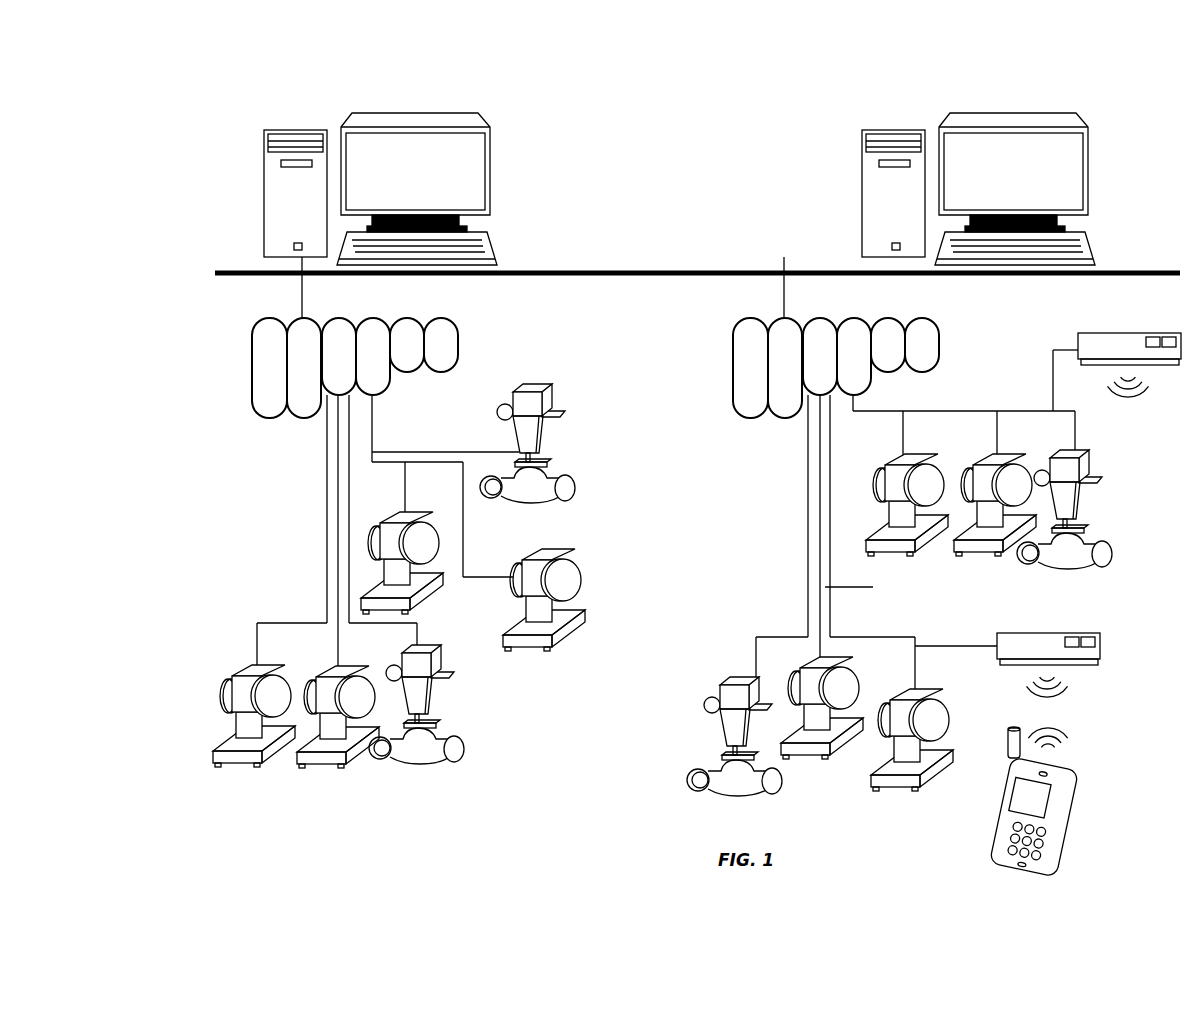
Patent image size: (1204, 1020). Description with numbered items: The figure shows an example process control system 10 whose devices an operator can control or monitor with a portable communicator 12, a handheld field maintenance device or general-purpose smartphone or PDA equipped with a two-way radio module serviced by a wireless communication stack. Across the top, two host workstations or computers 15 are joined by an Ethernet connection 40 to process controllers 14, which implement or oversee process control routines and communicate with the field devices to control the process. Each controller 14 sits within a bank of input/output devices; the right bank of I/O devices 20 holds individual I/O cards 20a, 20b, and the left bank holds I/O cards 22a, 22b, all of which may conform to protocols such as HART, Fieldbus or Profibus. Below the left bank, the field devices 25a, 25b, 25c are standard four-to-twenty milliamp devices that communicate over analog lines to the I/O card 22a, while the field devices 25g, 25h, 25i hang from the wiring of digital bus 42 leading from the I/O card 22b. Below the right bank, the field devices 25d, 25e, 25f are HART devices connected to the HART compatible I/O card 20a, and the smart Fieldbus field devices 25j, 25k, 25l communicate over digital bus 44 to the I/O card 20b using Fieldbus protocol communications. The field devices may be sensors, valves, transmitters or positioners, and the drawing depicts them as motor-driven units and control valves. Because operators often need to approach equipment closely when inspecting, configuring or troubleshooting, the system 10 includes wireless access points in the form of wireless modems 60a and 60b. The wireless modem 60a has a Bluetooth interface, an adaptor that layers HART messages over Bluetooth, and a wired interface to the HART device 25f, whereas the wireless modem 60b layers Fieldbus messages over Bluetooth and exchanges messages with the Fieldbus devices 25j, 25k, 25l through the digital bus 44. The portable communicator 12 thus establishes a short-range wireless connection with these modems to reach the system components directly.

The process control system 10 is at (699, 163).
The portable communicator 12 is at (1066, 773).
The process controller 14 is at (313, 320).
The host workstation 15 is at (287, 128).
The bank of I/O devices 20 is at (860, 353).
The HART compatible I/O card 20a is at (829, 320).
The I/O card 20b is at (864, 320).
The I/O card 22a is at (348, 320).
The I/O card 22b is at (381, 320).
The field device 25a is at (258, 671).
The field device 25b is at (343, 671).
The field device 25c is at (423, 648).
The HART field device 25d is at (752, 680).
The HART field device 25e is at (832, 668).
The HART field device 25f is at (916, 697).
The field device 25g is at (541, 383).
The field device 25h is at (410, 507).
The field device 25i is at (553, 556).
The smart field device 25j is at (908, 459).
The smart field device 25k is at (1002, 459).
The smart field device 25l is at (1073, 452).
The Ethernet connection 40 is at (546, 272).
The digital bus 42 is at (373, 428).
The digital bus 44 is at (979, 410).
The wireless modem 60a is at (1022, 633).
The wireless modem 60b is at (1113, 333).